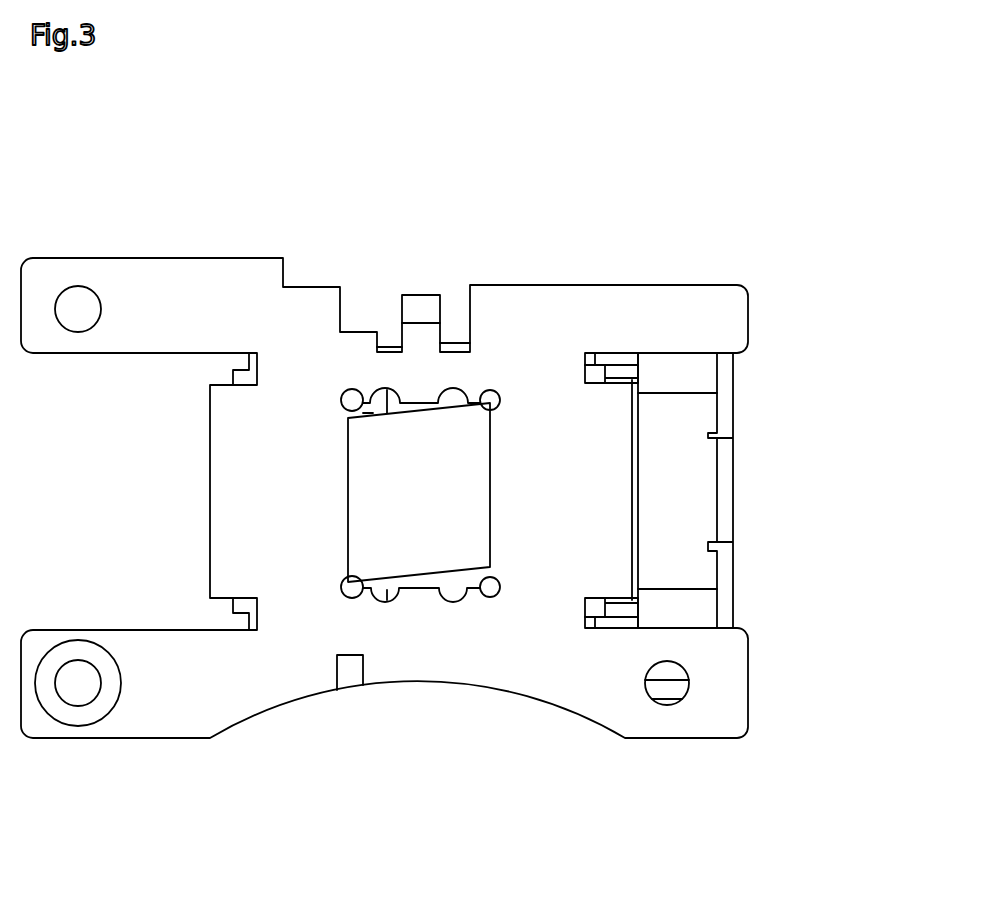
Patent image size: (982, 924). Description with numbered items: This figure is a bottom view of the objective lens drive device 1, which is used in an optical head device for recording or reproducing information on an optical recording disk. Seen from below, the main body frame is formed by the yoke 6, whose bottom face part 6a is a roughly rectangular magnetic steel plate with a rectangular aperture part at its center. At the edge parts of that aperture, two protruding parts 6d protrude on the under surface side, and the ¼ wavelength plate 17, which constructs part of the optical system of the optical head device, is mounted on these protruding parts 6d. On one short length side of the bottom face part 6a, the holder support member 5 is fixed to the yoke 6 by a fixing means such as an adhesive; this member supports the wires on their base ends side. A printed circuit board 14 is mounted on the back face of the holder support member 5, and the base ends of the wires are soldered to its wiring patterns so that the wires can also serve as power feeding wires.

The objective lens drive device 1 is at (770, 190).
The holder support member 5 is at (703, 505).
The yoke 6 is at (577, 697).
The bottom face part 6a is at (668, 728).
The protruding parts 6d is at (418, 403).
The printed circuit board 14 is at (725, 407).
The ¼ wavelength plate 17 is at (402, 548).